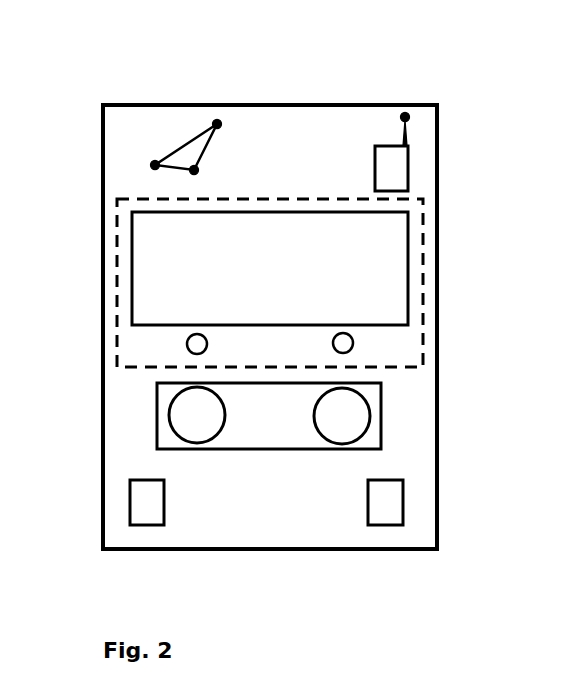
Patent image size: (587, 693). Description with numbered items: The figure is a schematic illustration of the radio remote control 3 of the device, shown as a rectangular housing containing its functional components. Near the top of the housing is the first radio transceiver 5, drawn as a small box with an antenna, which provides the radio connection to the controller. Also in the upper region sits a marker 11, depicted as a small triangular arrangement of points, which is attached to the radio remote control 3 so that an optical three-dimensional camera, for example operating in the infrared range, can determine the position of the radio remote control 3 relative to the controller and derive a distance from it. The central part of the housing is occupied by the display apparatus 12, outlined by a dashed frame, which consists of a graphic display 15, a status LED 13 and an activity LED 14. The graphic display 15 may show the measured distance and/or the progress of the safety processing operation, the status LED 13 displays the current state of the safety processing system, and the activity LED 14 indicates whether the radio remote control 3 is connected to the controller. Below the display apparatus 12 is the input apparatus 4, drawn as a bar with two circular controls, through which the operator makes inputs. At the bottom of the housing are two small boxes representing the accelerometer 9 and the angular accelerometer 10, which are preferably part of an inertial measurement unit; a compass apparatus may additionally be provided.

The radio remote control 3 is at (292, 130).
The input apparatus 4 is at (165, 393).
The first radio transceiver 5 is at (400, 158).
The accelerometer 9 is at (141, 512).
The angular accelerometer 10 is at (392, 510).
The marker 11 is at (187, 132).
The display apparatus 12 is at (130, 341).
The status LED 13 is at (185, 345).
The activity LED 14 is at (355, 343).
The graphic display 15 is at (390, 248).